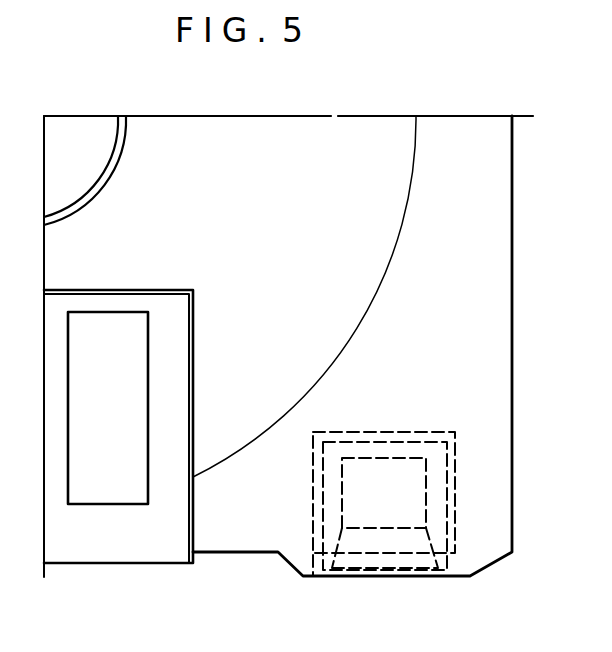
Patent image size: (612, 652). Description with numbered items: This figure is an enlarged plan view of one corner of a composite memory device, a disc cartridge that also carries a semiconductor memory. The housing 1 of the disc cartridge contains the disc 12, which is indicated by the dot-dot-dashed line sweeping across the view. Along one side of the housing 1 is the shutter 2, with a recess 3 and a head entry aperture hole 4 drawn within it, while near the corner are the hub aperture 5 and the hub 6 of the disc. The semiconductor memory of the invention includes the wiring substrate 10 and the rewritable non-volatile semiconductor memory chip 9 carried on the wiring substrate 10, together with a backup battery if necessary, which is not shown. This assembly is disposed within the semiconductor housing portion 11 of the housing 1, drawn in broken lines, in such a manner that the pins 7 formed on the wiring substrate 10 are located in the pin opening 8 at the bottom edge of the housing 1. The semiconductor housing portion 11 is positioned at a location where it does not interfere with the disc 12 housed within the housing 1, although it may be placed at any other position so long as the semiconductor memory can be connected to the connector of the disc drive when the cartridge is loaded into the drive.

The housing 1 is at (513, 335).
The shutter 2 is at (96, 550).
The recesses 3 is at (194, 333).
The head entry aperture holes 4 is at (134, 497).
The hub aperture 5 is at (127, 125).
The hub 6 is at (89, 130).
The pins 7 is at (416, 562).
The pin opening 8 is at (320, 578).
The rewritable non-volatile semiconductor memory 9 is at (420, 473).
The wiring substrate 10 is at (443, 500).
The semiconductor housing portion 11 is at (430, 432).
The disc 12 is at (400, 213).